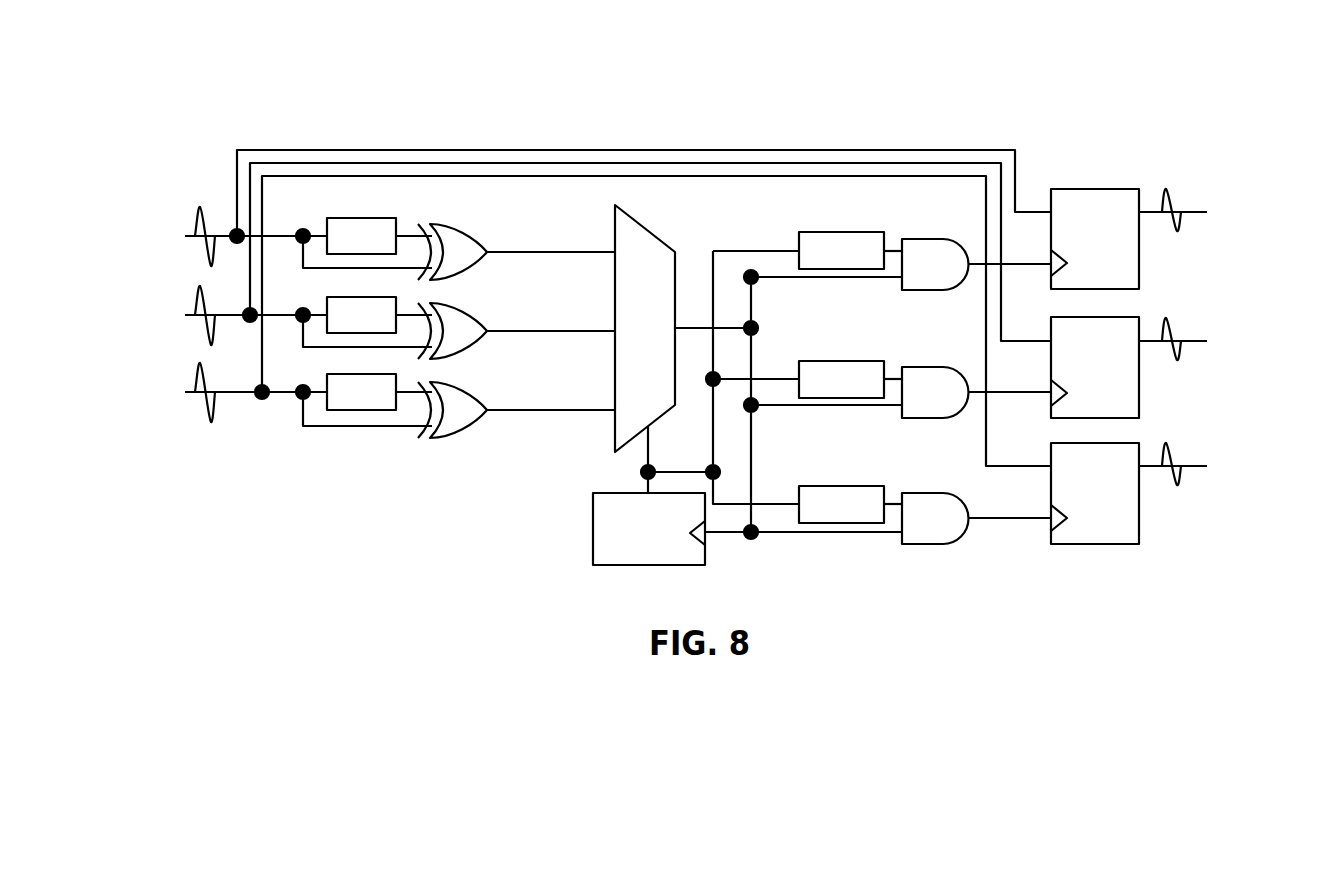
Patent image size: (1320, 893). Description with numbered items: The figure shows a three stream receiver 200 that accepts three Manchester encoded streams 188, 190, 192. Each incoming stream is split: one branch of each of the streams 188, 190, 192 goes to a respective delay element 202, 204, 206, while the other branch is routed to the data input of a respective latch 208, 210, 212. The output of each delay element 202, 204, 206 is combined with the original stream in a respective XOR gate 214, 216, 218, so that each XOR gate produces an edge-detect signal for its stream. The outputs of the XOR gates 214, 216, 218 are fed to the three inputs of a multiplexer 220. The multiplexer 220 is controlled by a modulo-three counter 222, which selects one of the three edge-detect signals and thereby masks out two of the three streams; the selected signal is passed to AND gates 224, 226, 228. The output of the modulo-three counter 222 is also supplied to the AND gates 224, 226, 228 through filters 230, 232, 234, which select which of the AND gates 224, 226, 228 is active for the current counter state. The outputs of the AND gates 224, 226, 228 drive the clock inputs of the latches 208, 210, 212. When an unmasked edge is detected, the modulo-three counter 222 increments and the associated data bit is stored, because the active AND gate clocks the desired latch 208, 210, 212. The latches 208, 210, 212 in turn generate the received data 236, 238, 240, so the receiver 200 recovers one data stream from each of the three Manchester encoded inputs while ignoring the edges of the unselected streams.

The receiver 200 is at (1168, 86).
The Manchester encoded stream 188 is at (199, 207).
The Manchester encoded stream 190 is at (198, 286).
The Manchester encoded stream 192 is at (198, 363).
The delay element 202 is at (365, 218).
The delay element 204 is at (373, 297).
The delay element 206 is at (368, 410).
The XOR gate 214 is at (470, 226).
The XOR gate 216 is at (474, 306).
The XOR gate 218 is at (470, 432).
The multiplexer 220 is at (650, 231).
The mod-3 counter 222 is at (593, 525).
The AND gate 224 is at (931, 239).
The AND gate 226 is at (931, 367).
The AND gate 228 is at (931, 493).
The filter 230 is at (840, 232).
The filter 232 is at (840, 361).
The filter 234 is at (838, 486).
The latch 208 is at (1139, 256).
The latch 210 is at (1139, 389).
The latch 212 is at (1139, 516).
The received data 236 is at (1172, 203).
The received data 238 is at (1173, 325).
The received data 240 is at (1173, 450).